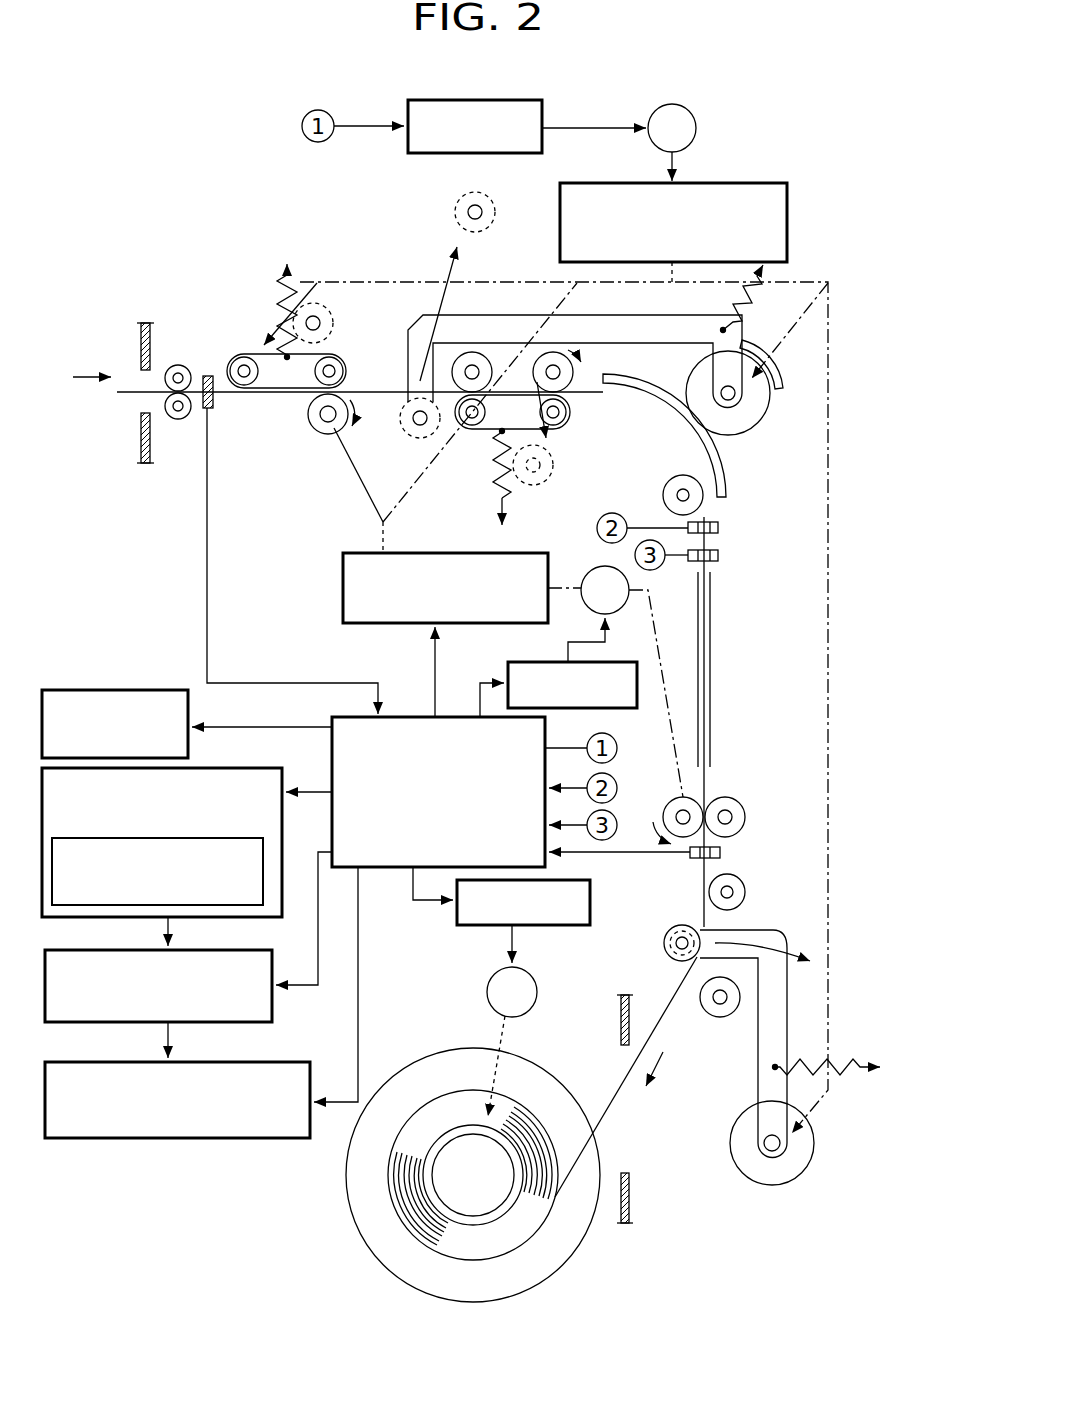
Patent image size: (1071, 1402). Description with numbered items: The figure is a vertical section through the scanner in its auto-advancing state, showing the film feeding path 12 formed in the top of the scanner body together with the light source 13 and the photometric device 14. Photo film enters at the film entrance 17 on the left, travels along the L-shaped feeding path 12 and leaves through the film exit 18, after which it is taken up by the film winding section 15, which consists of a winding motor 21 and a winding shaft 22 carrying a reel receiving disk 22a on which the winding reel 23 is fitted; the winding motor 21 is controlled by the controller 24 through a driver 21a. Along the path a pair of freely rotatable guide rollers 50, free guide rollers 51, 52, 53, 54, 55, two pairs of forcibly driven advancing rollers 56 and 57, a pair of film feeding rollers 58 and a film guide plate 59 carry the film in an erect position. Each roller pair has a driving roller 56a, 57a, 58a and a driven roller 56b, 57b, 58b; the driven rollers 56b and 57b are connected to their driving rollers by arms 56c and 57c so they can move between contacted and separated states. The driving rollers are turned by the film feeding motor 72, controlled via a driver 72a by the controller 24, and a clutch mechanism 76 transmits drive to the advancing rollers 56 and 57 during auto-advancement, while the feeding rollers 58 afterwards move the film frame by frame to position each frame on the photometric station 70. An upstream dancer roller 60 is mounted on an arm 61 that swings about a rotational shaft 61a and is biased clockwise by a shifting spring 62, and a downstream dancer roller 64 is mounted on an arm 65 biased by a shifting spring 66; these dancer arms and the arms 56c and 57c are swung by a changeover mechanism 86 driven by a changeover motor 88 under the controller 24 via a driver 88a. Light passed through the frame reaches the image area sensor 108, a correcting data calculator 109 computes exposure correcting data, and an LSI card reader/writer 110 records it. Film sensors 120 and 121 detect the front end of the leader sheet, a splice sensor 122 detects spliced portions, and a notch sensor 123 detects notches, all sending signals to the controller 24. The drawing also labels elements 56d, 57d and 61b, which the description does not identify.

The film feeding path 12 is at (564, 648).
The light source 13 is at (118, 690).
The photometric device 14 is at (228, 768).
The film winding section 15 is at (333, 1187).
The film entrance 17 is at (143, 380).
The film exit 18 is at (628, 1127).
The winding motor 21 is at (537, 992).
The driver 21a is at (590, 900).
The winding shaft 22 is at (455, 1150).
The reel receiving disk 22a is at (393, 1247).
The winding reel 23 is at (500, 1218).
The controller 24 is at (407, 717).
The pair of freely rotatable guide rollers 50 is at (178, 365).
The free guide roller 51 is at (240, 355).
The free guide roller 52 is at (472, 352).
The free guide roller 53 is at (662, 495).
The free guide roller 54 is at (745, 892).
The free guide roller 55 is at (712, 1016).
The pair of advancing rollers 56 is at (347, 348).
The driving roller 56a is at (328, 436).
The driven roller 56b is at (343, 368).
The arm 56c is at (282, 388).
The spring 56d is at (283, 300).
The pair of advancing rollers 57 is at (580, 437).
The driving roller 57a is at (570, 386).
The driven roller 57b is at (577, 418).
The arm 57c is at (460, 430).
The spring 57d is at (490, 467).
The pair of film feeding rollers 58 is at (728, 794).
The driving roller 58a is at (678, 796).
The driven roller 58b is at (746, 808).
The film guide plate 59 is at (728, 492).
The upstream dancer roller 60 is at (410, 436).
The arm 61 is at (608, 330).
The rotational shaft 61a is at (735, 402).
The arc guide 61b is at (781, 391).
The shifting spring 62 is at (758, 300).
The downstream dancer roller 64 is at (663, 945).
The arm 65 is at (758, 1057).
The shifting spring 66 is at (808, 1058).
The photometric station 70 is at (716, 664).
The film feeding motor 72 is at (590, 570).
The driver 72a is at (507, 673).
The clutch mechanism 76 is at (343, 585).
The changeover mechanism 86 is at (753, 183).
The changeover motor 88 is at (672, 104).
The driver 88a is at (483, 100).
The image area sensor 108 is at (215, 905).
The correcting data calculator 109 is at (272, 1018).
The LSI card reader/writer 110 is at (163, 1138).
The film sensor 120 is at (213, 410).
The film sensor 121 is at (720, 852).
The splice sensor 122 is at (718, 527).
The notch sensor 123 is at (718, 556).